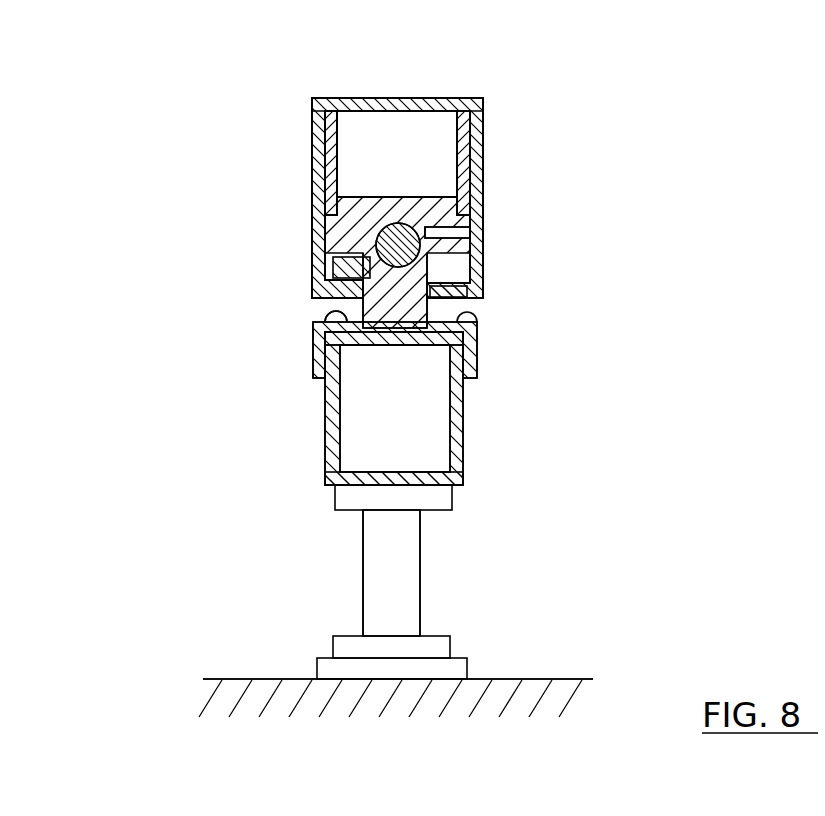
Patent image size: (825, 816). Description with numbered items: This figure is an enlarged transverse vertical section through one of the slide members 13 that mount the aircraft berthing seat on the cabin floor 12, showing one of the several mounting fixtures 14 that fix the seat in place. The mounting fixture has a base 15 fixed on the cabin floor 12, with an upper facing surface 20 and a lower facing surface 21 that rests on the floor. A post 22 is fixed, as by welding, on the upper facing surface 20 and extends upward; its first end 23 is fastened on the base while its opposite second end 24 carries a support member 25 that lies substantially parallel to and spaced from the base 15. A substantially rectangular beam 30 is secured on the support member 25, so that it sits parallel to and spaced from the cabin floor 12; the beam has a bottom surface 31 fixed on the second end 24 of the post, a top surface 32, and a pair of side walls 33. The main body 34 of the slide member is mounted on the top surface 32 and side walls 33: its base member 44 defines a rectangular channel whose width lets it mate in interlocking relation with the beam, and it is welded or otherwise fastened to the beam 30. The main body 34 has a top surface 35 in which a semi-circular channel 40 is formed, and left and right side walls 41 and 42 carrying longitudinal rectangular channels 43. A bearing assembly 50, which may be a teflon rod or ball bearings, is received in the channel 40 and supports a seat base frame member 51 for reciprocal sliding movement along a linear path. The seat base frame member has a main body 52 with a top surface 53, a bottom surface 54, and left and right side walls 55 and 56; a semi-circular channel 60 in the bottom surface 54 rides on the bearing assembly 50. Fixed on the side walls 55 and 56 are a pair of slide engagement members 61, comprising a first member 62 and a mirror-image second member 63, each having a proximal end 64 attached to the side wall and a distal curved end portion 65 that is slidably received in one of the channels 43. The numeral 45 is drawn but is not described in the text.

The cabin floor 12 is at (565, 678).
The slide member 13 is at (273, 316).
The mounting fixture 14 is at (492, 463).
The base 15 is at (440, 655).
The upper facing surface 20 is at (318, 650).
The lower facing surface 21 is at (442, 680).
The post 22 is at (405, 570).
The first end 23 is at (377, 623).
The second end 24 is at (408, 530).
The support member 25 is at (340, 493).
The rectangular beam 30 is at (463, 407).
The bottom surface 31 is at (360, 487).
The top surface 32 is at (390, 345).
The side walls 33 is at (340, 428).
The main body 34 is at (300, 312).
The top surface 35 is at (335, 245).
The arcuately shaped channel 40 is at (480, 262).
The left side wall 41 is at (343, 303).
The right side wall 42 is at (468, 303).
The rectangular-shaped channel 43 is at (468, 312).
The base member 44 is at (477, 333).
The top wall portion 45 is at (437, 345).
The bearing assembly 50 is at (482, 226).
The seat base frame member 51 is at (343, 208).
The main body 52 is at (452, 152).
The top surface 53 is at (365, 97).
The bottom surface 54 is at (390, 212).
The left side wall 55 is at (340, 111).
The right side wall 56 is at (460, 117).
The arcuately shaped channel 60 is at (407, 226).
The slide engagement members 61 is at (310, 141).
The first member 62 is at (313, 158).
The second member 63 is at (483, 163).
The proximal end 64 is at (313, 114).
The curved end portion 65 is at (310, 282).